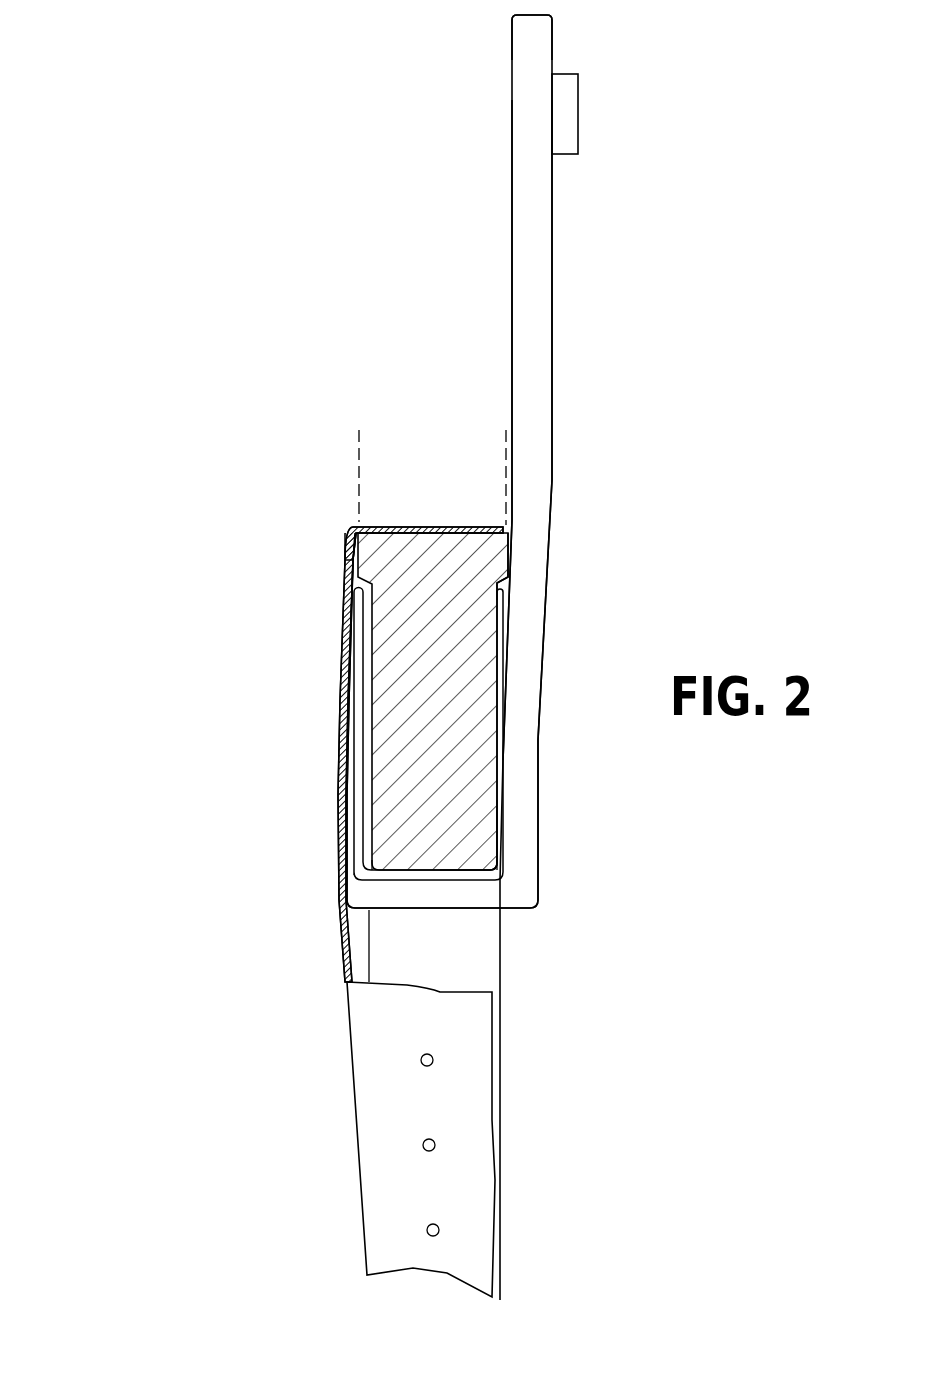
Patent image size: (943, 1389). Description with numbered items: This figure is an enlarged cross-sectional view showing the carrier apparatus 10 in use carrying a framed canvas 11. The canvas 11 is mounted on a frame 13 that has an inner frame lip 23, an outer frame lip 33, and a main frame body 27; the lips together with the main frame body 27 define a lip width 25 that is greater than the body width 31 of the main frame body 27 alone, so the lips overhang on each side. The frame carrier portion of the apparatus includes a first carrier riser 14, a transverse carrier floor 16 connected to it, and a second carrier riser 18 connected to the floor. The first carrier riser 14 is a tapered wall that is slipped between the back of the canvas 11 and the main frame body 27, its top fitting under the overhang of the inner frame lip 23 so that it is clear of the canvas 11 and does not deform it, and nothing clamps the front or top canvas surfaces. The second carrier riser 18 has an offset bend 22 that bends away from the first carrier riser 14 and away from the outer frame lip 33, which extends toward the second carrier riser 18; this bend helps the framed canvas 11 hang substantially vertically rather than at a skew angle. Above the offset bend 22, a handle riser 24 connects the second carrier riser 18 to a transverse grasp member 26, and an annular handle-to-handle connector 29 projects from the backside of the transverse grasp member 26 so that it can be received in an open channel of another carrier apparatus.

The carrier apparatus 10 is at (567, 403).
The framed canvas 11 is at (430, 526).
The frame 13 is at (400, 619).
The first carrier riser 14 is at (353, 767).
The transverse carrier floor 16 is at (430, 896).
The second carrier riser 18 is at (520, 772).
The offset bend 22 is at (533, 545).
The inner frame lip 23 is at (368, 565).
The handle riser 24 is at (525, 333).
The lip width 25 is at (499, 463).
The transverse grasp member 26 is at (532, 53).
The main frame body 27 is at (462, 837).
The annular handle-to-handle connector 29 is at (567, 122).
The body width 31 is at (563, 868).
The outer frame lip 33 is at (507, 567).